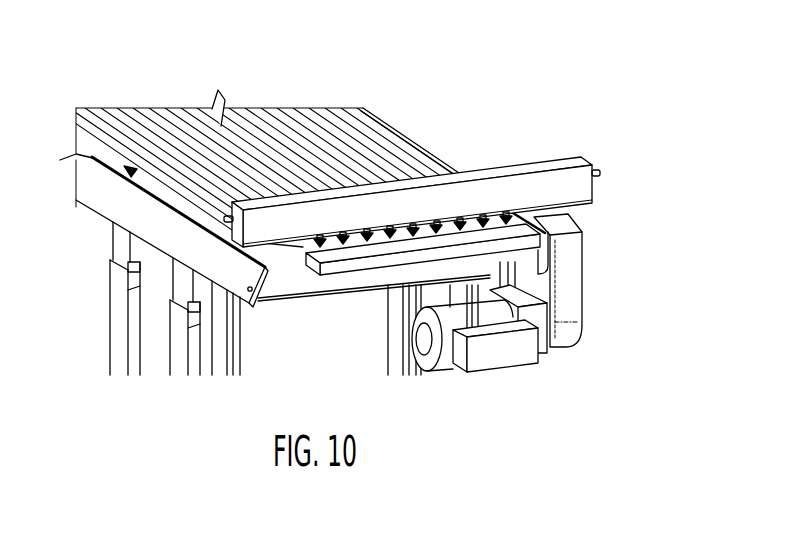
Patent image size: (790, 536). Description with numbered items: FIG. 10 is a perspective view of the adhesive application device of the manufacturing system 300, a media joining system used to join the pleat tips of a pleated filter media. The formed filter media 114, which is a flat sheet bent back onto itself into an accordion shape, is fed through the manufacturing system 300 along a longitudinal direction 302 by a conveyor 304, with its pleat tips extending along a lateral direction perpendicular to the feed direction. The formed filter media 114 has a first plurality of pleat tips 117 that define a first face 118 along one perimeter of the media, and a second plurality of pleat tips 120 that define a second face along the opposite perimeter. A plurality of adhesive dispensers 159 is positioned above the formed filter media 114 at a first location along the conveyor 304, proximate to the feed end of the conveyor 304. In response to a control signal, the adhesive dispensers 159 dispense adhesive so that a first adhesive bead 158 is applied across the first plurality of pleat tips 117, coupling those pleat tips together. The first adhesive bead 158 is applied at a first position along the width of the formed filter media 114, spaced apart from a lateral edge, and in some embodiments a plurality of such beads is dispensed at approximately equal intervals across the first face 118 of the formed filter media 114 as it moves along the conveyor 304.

The manufacturing system 300 is at (194, 82).
The longitudinal direction 302 is at (156, 186).
The conveyor 304 is at (158, 262).
The first face 118 is at (334, 258).
The adhesive dispensers 159 is at (501, 197).
The formed filter media 114 is at (530, 240).
The first plurality of pleat tips 117 is at (306, 254).
The second plurality of pleat tips 120 is at (332, 263).
The first adhesive bead 158 is at (437, 232).